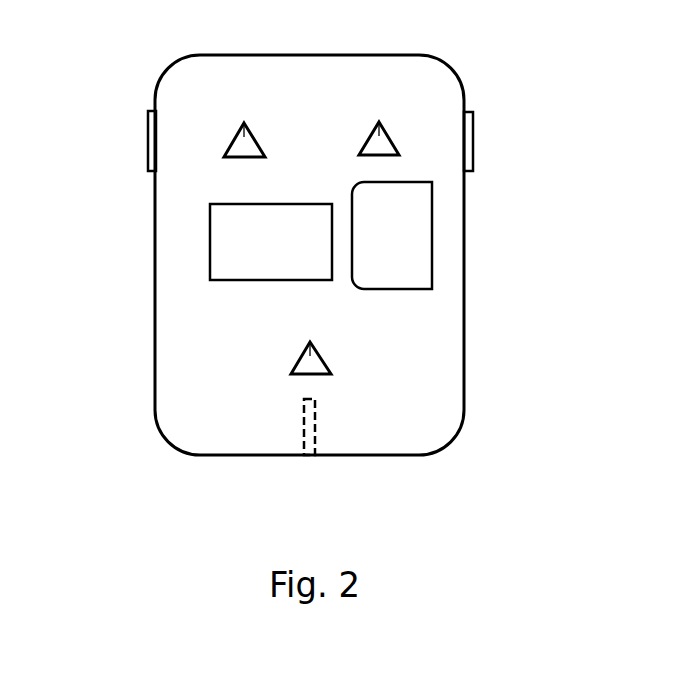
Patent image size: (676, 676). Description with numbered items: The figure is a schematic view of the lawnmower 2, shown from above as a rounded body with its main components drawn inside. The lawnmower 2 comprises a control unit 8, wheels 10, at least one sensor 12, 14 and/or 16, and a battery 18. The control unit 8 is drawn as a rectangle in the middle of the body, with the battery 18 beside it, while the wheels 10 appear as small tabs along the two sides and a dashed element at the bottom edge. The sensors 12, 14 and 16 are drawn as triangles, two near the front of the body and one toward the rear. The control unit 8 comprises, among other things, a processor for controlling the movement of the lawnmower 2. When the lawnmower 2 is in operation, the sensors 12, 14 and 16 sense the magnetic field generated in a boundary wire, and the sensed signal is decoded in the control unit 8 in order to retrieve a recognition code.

The lawnmower 2 is at (316, 116).
The control unit 8 is at (271, 242).
The wheels 10 is at (150, 150).
The sensor 12 is at (375, 120).
The sensor 14 is at (240, 130).
The sensor 16 is at (318, 352).
The battery 18 is at (392, 235).